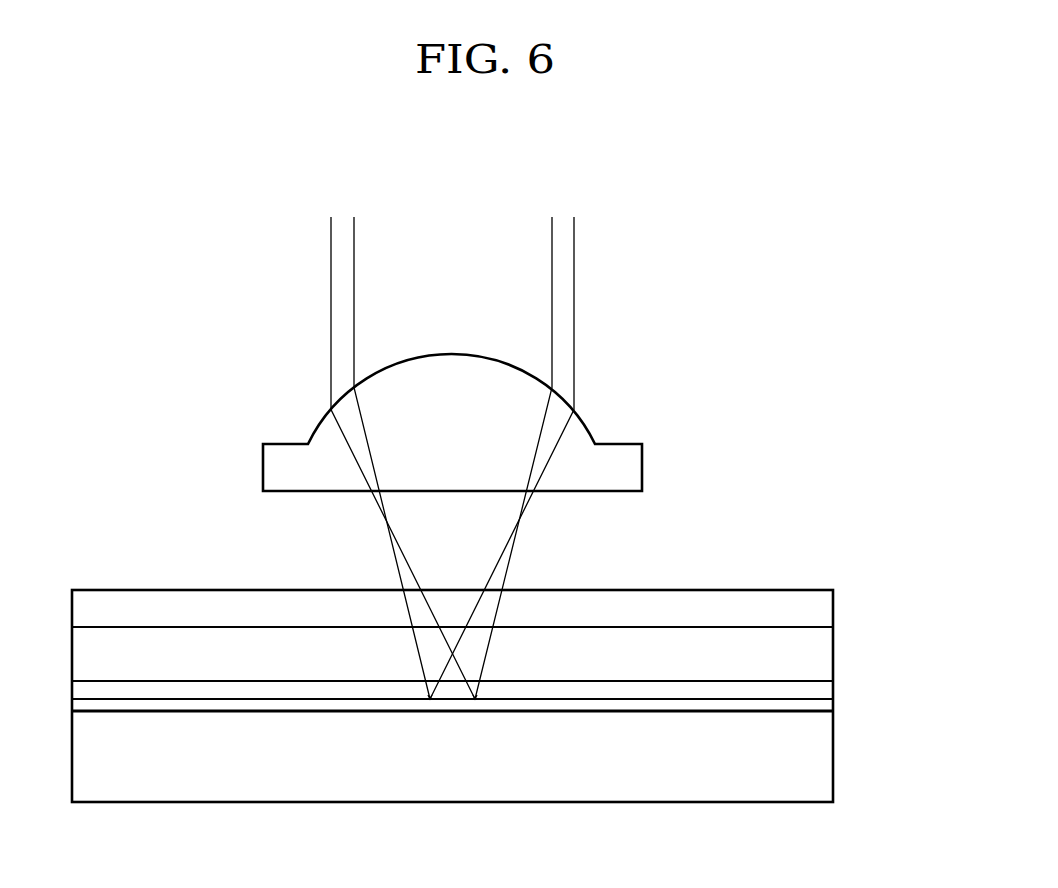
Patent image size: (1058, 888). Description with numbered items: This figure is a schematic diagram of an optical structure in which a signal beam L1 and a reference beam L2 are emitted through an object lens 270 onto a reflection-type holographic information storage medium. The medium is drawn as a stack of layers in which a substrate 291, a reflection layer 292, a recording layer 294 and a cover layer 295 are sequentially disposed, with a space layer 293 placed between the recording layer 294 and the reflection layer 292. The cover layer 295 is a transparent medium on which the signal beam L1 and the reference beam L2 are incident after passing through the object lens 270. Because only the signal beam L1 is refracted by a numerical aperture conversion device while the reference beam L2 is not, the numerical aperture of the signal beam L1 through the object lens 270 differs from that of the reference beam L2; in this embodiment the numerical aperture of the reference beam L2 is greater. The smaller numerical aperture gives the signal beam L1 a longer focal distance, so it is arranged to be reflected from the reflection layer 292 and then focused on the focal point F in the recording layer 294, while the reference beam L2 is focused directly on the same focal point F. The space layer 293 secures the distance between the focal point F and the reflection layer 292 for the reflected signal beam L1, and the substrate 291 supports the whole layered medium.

The object lens 270 is at (643, 469).
The substrate 291 is at (834, 760).
The reflection layer 292 is at (834, 705).
The space layer 293 is at (834, 691).
The recording layer 294 is at (834, 656).
The cover layer 295 is at (834, 608).
The signal beam L1 is at (551, 306).
The reference beam L2 is at (575, 315).
The focal point F is at (448, 684).